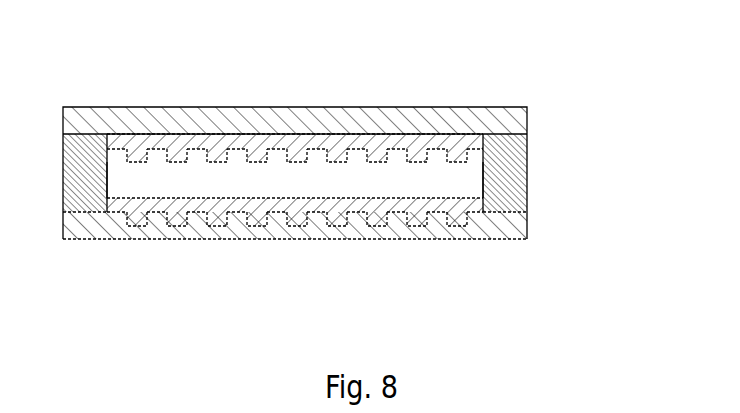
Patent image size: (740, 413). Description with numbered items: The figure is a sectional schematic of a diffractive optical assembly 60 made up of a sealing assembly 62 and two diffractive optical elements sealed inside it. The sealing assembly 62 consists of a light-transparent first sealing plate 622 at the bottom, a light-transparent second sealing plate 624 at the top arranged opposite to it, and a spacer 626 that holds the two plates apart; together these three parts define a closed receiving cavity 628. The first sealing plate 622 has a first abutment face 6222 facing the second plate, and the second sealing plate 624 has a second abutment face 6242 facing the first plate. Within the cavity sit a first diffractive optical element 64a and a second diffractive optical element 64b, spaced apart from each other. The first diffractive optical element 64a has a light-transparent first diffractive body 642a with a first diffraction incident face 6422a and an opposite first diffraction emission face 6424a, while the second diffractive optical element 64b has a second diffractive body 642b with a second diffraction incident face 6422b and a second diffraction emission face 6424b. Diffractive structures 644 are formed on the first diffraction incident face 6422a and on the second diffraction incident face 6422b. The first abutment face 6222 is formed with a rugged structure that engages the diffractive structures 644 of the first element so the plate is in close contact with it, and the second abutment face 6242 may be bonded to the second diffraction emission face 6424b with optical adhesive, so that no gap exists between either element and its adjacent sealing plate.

The diffractive optical assembly 60 is at (85, 24).
The sealing assembly 62 is at (363, 173).
The first sealing plate 622 is at (329, 221).
The second sealing plate 624 is at (527, 116).
The spacer 626 is at (500, 182).
The receiving cavity 628 is at (120, 157).
The second abutment face 6242 is at (471, 114).
The first abutment face 6222 is at (395, 227).
The first diffractive optical element 64a is at (287, 271).
The second diffractive optical element 64b is at (295, 89).
The first diffractive body 642a is at (198, 290).
The second diffractive body 642b is at (276, 68).
The diffractive structures 644 is at (253, 150).
The first diffraction incident face 6422a is at (397, 199).
The second diffraction incident face 6422b is at (314, 142).
The first diffraction emission face 6424a is at (278, 205).
The second diffraction emission face 6424b is at (459, 151).